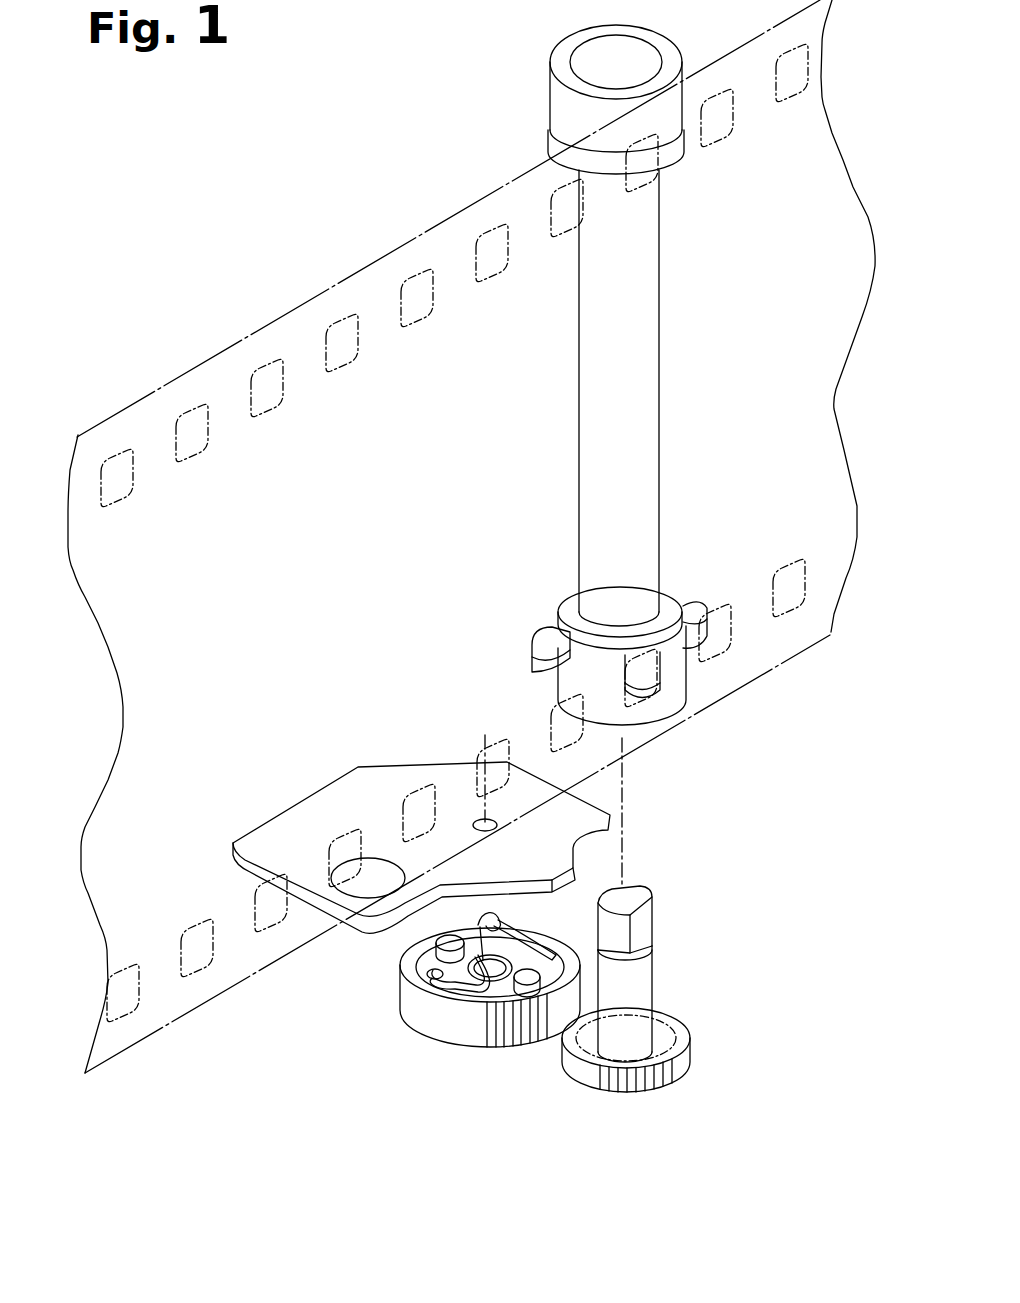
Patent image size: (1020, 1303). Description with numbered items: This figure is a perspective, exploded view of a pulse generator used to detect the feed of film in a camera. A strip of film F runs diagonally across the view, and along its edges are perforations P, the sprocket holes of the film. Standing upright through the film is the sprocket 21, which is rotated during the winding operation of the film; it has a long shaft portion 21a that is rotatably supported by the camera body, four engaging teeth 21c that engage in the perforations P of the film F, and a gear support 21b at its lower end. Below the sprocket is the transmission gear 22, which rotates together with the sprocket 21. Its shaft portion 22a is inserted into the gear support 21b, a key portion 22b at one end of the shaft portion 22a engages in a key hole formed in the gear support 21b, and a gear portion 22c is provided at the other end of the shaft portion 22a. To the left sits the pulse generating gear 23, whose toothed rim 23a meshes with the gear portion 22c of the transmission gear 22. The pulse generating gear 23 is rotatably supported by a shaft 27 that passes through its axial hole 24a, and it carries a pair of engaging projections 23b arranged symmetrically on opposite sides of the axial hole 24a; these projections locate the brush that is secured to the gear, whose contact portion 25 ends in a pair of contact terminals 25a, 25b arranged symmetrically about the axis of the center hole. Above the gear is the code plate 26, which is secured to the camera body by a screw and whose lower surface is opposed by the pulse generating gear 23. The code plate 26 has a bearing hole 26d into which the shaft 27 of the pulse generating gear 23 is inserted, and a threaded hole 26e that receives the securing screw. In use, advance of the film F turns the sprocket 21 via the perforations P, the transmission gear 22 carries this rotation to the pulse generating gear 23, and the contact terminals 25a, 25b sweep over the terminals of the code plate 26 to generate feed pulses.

The film F is at (471, 536).
The perforations P is at (462, 532).
The sprocket 21 is at (649, 455).
The shaft portion 21a is at (673, 398).
The gear support 21b is at (649, 670).
The engaging teeth 21c is at (631, 610).
The transmission gear 22 is at (661, 989).
The shaft portion 22a is at (677, 1004).
The key portion 22b is at (670, 919).
The gear portion 22c is at (661, 1050).
The pulse generating gear 23 is at (454, 1008).
The ratchet wheel teeth 23a is at (508, 1059).
The engaging projections 23b is at (448, 1011).
The axial hole 24a is at (466, 928).
The spring 25 is at (454, 990).
The contact terminal 25a is at (420, 1028).
The contact terminal 25b is at (538, 926).
The code plate 26 is at (421, 811).
The bearing hole 26d is at (527, 793).
The threaded hole 26e is at (344, 812).
The shaft 27 is at (463, 755).